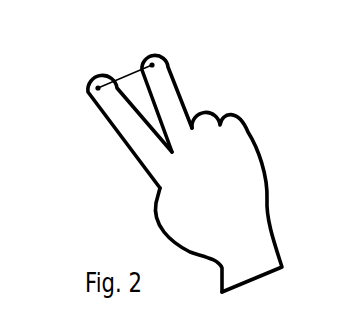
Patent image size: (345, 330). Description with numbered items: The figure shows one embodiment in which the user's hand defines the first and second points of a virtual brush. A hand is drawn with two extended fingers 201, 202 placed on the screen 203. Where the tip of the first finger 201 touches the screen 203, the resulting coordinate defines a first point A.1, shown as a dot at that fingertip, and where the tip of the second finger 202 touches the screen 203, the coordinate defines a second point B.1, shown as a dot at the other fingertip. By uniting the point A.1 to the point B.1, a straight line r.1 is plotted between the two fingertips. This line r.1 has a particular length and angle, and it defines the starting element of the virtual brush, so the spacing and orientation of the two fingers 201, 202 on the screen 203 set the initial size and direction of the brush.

The finger 201 is at (114, 128).
The finger 202 is at (180, 96).
The screen 203 is at (186, 159).
The point A.1 is at (75, 95).
The point B.1 is at (175, 57).
The straight line r.1 is at (125, 72).